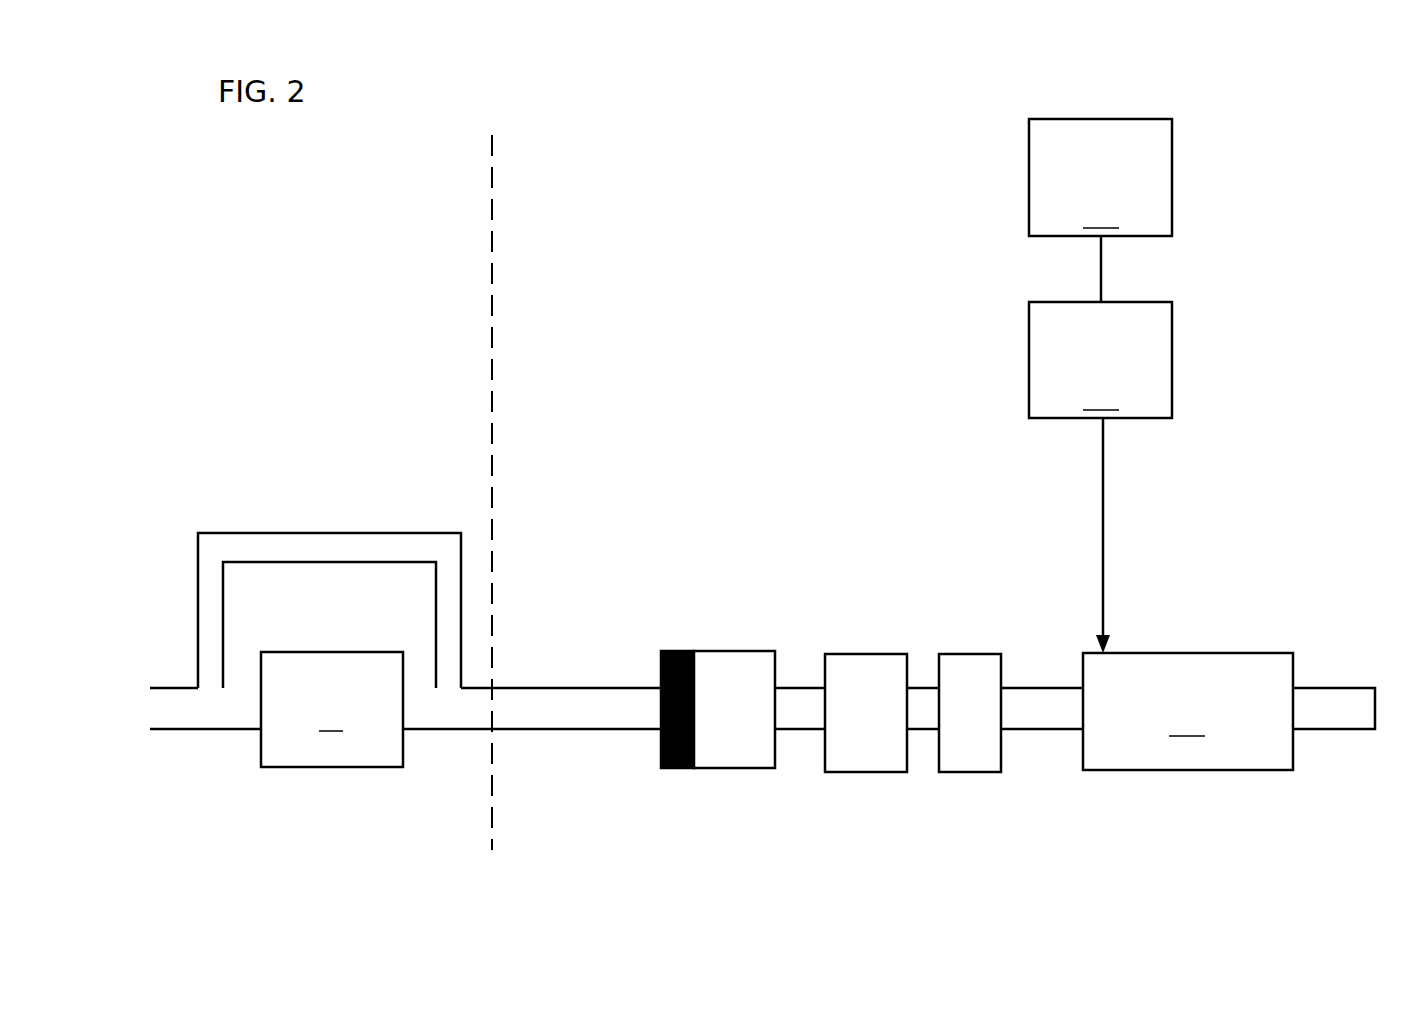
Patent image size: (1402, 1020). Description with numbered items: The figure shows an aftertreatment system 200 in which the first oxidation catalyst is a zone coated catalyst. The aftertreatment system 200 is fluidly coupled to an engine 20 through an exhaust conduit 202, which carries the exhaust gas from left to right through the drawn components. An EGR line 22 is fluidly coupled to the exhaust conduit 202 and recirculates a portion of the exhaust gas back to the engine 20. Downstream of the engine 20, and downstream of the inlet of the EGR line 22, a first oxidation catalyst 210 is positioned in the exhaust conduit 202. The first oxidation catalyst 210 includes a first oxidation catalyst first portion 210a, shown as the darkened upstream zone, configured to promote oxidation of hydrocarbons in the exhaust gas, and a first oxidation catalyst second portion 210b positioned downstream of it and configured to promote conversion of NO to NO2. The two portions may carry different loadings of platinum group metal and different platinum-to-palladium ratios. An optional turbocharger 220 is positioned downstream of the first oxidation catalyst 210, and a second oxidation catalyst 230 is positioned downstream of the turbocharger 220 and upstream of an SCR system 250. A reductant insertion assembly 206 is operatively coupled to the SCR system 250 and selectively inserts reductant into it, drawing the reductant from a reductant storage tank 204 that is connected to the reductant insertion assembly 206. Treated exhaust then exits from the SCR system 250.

The aftertreatment system 200 is at (1273, 142).
The reductant storage tank 204 is at (1100, 177).
The reductant insertion assembly 206 is at (1100, 360).
The EGR line 22 is at (342, 533).
The engine 20 is at (332, 709).
The exhaust conduit 202 is at (573, 735).
The first oxidation catalyst 210 is at (751, 573).
The first oxidation catalyst first portion 210a is at (680, 651).
The first oxidation catalyst second portion 210b is at (746, 651).
The turbocharger 220 is at (862, 654).
The second oxidation catalyst 230 is at (972, 654).
The SCR system 250 is at (1229, 711).